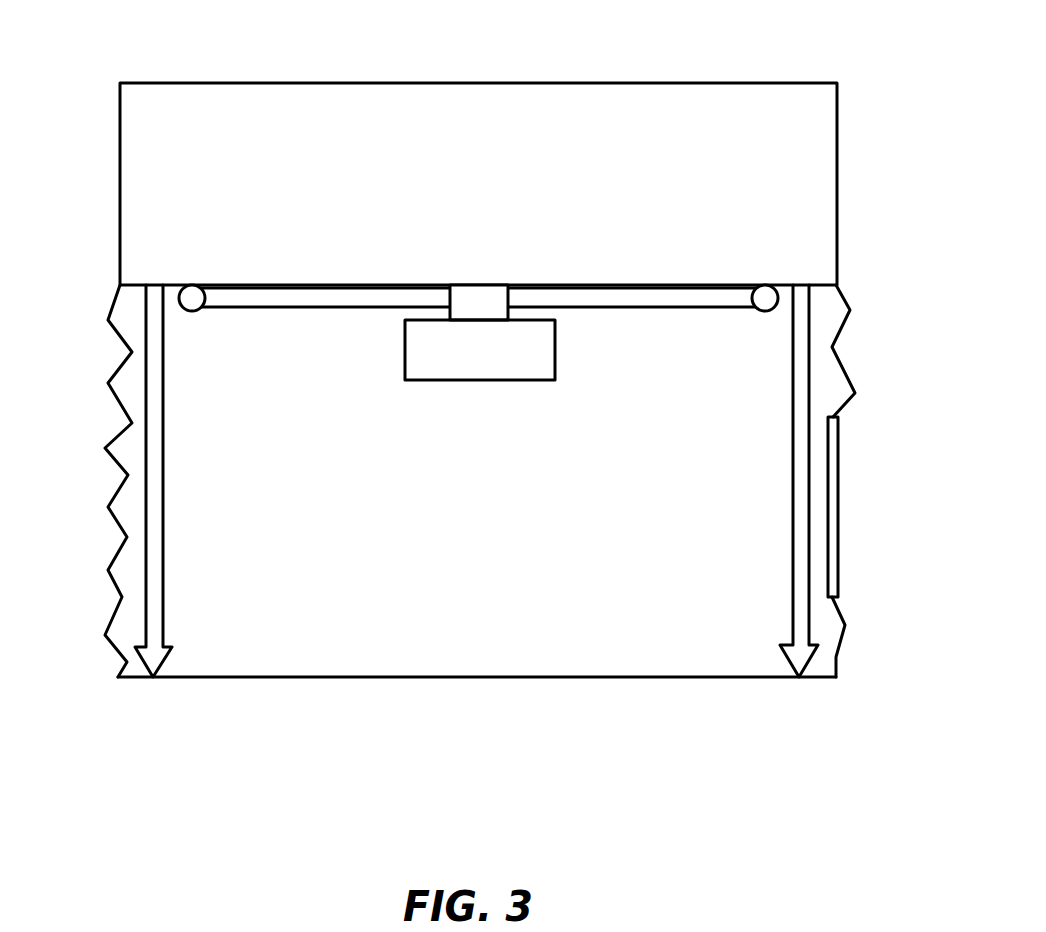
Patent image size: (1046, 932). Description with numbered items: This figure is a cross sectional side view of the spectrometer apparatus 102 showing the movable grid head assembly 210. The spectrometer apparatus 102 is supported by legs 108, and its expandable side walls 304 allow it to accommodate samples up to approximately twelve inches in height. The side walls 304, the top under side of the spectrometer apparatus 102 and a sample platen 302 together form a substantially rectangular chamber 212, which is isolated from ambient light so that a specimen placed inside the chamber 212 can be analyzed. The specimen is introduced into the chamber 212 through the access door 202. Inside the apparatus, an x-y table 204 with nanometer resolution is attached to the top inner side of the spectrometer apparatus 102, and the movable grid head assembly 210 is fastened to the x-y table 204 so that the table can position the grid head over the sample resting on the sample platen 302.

The spectrometer apparatus 102 is at (470, 115).
The x-y table 204 is at (765, 282).
The movable grid head assembly 210 is at (472, 382).
The access door 202 is at (832, 500).
The expandable side walls 304 is at (108, 507).
The chamber 212 is at (227, 650).
The legs 108 is at (800, 675).
The sample platen 302 is at (457, 679).